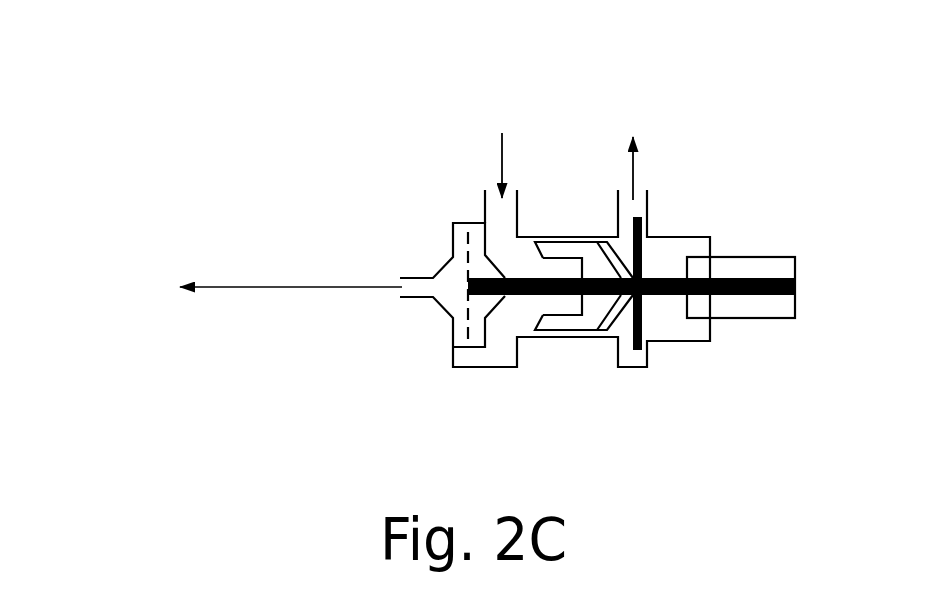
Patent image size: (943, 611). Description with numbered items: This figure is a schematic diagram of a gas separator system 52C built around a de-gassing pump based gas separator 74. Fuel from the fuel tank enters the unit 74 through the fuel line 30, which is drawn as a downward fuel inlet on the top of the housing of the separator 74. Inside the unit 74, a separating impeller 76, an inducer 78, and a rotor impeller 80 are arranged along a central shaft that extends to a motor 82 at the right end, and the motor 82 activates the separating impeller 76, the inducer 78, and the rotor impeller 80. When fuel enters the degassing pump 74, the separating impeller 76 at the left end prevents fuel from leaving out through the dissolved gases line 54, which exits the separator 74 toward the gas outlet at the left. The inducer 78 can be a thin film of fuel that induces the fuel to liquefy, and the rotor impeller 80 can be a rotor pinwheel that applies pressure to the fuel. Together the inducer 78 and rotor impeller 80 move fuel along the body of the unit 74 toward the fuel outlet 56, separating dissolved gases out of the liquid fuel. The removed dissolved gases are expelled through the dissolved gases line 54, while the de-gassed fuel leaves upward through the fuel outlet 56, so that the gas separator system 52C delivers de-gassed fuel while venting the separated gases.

The gas separator system 52C is at (368, 97).
The fuel line 30 is at (498, 160).
The dissolved gases line 54 is at (217, 286).
The fuel outlet 56 is at (632, 172).
The de-gassing pump based gas separator 74 is at (723, 228).
The separating impeller 76 is at (465, 335).
The inducer 78 is at (570, 337).
The rotor impeller 80 is at (625, 343).
The motor 82 is at (738, 320).